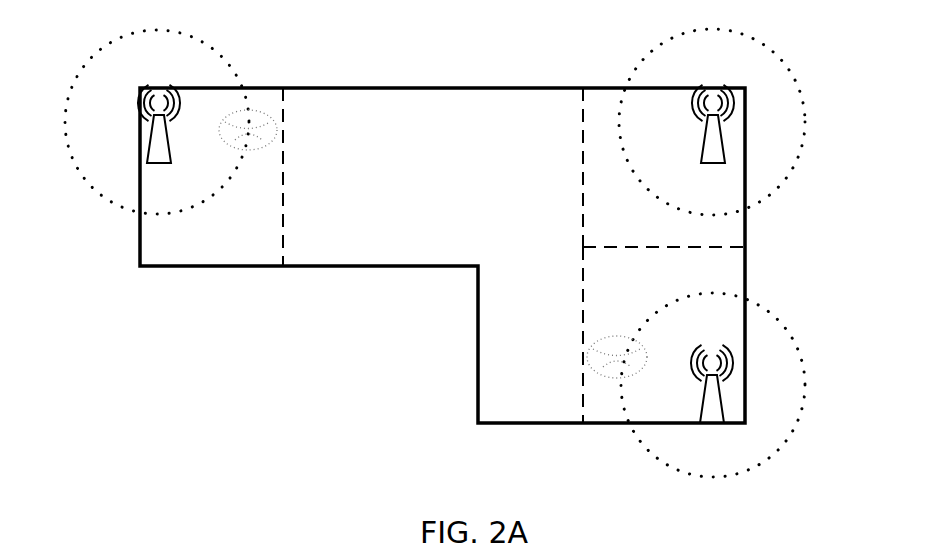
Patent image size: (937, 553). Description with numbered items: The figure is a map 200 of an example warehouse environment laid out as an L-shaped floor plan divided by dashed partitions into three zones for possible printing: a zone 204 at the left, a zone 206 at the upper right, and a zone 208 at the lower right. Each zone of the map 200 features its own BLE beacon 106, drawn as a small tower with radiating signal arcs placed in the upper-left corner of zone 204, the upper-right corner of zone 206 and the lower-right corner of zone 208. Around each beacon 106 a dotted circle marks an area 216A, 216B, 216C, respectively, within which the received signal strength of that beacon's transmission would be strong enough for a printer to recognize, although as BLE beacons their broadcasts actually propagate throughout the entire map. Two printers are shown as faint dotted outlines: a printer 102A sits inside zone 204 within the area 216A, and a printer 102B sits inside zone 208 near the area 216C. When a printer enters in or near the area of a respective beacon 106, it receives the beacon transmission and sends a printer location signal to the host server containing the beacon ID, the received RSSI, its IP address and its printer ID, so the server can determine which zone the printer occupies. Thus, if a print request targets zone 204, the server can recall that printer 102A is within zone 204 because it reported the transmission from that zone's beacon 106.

The map 200 is at (370, 86).
The zone 204 is at (226, 204).
The zone 206 is at (652, 206).
The zone 208 is at (686, 329).
The BLE beacon 106 is at (155, 147).
The printer 102A is at (267, 138).
The printer 102B is at (585, 350).
The area 216A is at (98, 50).
The area 216B is at (638, 72).
The area 216C is at (767, 310).